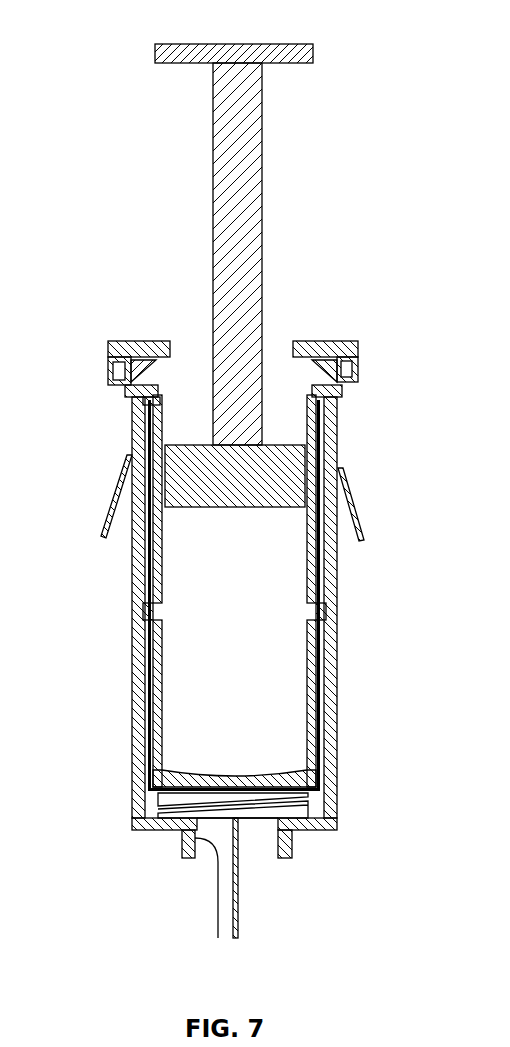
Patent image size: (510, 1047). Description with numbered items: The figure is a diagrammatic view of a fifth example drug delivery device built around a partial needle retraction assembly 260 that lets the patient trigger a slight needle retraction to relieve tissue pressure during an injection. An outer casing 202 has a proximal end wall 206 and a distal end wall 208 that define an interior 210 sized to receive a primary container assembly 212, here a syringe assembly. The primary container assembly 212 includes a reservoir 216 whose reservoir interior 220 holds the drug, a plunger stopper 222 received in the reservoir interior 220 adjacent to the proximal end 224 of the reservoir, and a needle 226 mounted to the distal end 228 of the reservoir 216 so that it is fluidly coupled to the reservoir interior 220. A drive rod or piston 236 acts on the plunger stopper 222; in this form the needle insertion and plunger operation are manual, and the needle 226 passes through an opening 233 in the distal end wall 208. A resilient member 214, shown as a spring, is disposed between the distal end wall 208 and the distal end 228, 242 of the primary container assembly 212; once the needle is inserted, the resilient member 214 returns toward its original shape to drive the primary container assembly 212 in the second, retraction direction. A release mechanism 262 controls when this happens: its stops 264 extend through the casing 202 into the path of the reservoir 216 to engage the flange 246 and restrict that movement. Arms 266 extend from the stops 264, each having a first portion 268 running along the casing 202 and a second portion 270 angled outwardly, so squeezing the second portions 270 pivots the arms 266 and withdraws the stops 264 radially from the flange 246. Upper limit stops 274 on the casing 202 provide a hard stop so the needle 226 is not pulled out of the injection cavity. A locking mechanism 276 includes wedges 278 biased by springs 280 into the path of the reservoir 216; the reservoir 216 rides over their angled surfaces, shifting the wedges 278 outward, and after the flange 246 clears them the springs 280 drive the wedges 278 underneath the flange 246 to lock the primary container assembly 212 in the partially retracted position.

The outer casing 202 is at (338, 620).
The proximal end wall 206 is at (170, 43).
The distal end wall 208 is at (312, 832).
The interior 210 is at (322, 576).
The primary container assembly 212 is at (322, 712).
The resilient member 214 is at (165, 830).
The reservoir 216 is at (157, 658).
The reservoir interior 220 is at (205, 565).
The plunger stopper 222 is at (165, 500).
The proximal end 224 is at (312, 428).
The needle 226 is at (240, 910).
The distal end 228 is at (300, 775).
The opening 233 is at (218, 909).
The drive rod or piston 236 is at (263, 115).
The distal end of housing 242 is at (158, 790).
The flange 246 is at (310, 392).
The partial needle retraction assembly 260 is at (368, 167).
The release mechanism 262 is at (362, 537).
The stops 264 is at (160, 388).
The arms 266 is at (110, 497).
The first portion 268 is at (125, 450).
The second portion 270 is at (358, 500).
The upper limit stops 274 is at (153, 341).
The locking mechanism 276 is at (331, 345).
The wedges 278 is at (128, 347).
The springs 280 is at (117, 386).